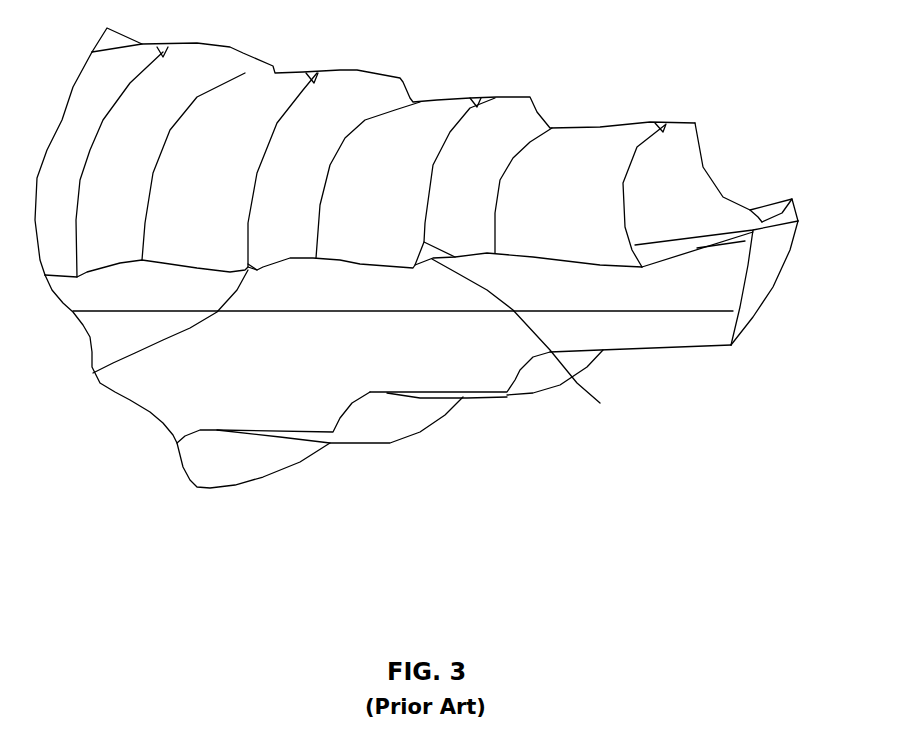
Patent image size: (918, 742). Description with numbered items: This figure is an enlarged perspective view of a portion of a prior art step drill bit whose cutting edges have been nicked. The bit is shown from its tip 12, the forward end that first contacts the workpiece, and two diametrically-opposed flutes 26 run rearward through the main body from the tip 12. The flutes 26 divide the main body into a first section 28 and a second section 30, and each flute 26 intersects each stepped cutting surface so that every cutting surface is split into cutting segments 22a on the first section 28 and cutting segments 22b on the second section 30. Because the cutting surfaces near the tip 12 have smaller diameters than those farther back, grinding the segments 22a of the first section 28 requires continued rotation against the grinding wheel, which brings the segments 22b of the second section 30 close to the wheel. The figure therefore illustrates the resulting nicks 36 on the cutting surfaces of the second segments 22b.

The tip 12 is at (727, 234).
The cutting segments of the first section 22a is at (486, 420).
The cutting segments of the second section 22b is at (455, 147).
The flute 26 is at (444, 322).
The first section 28 is at (320, 470).
The second section 30 is at (385, 146).
The nicks 36 is at (376, 348).